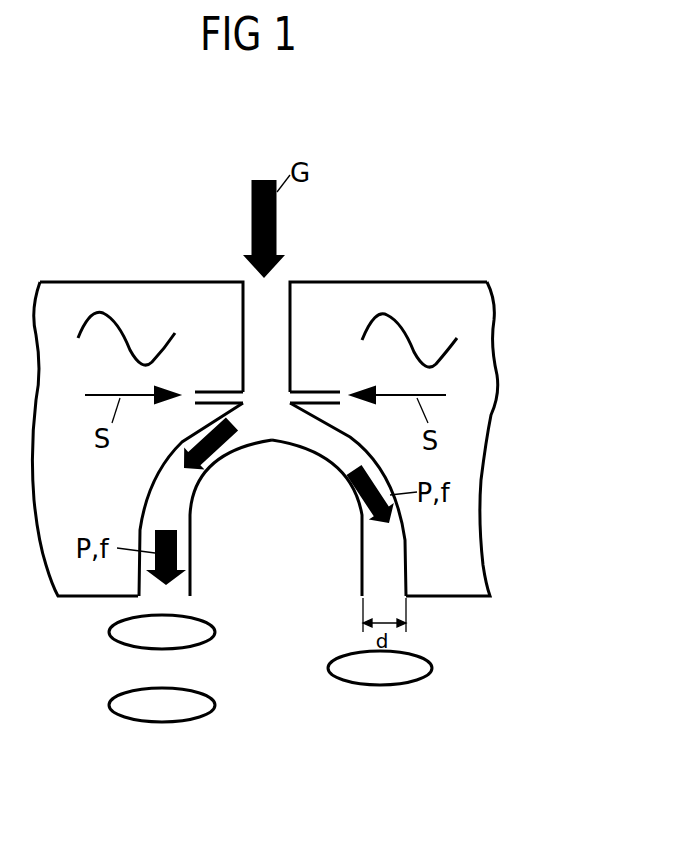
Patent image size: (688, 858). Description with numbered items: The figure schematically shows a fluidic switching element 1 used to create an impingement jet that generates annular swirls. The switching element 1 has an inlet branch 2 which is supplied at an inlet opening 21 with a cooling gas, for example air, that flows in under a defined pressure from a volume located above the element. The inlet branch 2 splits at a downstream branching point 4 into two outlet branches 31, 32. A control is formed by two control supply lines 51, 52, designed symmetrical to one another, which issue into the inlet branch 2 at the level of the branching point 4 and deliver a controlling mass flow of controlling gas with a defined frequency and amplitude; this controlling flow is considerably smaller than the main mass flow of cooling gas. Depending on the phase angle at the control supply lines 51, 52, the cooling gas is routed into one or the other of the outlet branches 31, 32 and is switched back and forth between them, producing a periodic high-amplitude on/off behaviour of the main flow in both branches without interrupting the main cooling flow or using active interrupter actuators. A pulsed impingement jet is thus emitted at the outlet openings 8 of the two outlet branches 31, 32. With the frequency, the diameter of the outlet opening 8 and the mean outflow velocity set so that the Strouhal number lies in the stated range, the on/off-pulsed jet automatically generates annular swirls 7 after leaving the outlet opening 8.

The fluidic switching element 1 is at (432, 258).
The inlet branch 2 is at (275, 302).
The inlet opening 21 is at (275, 284).
The branching point 4 is at (267, 393).
The control supply line 51 is at (218, 388).
The control supply line 52 is at (312, 388).
The outlet branch 31 is at (178, 498).
The outlet branch 32 is at (380, 552).
The outlet opening 8 is at (165, 597).
The annular swirls 7 is at (198, 721).